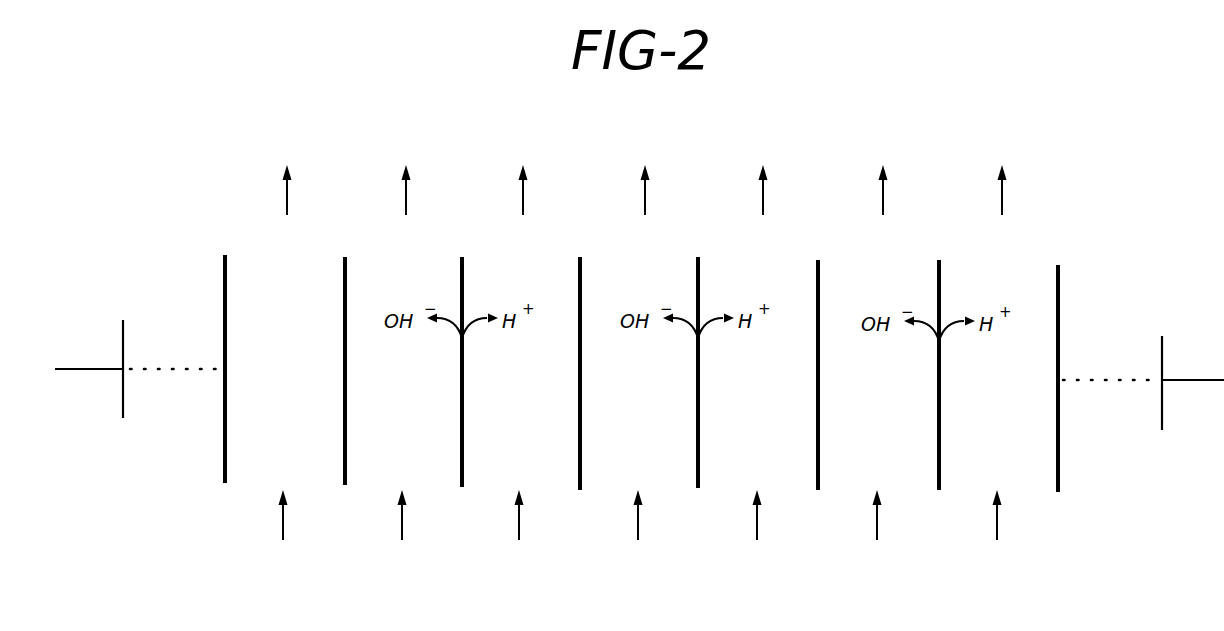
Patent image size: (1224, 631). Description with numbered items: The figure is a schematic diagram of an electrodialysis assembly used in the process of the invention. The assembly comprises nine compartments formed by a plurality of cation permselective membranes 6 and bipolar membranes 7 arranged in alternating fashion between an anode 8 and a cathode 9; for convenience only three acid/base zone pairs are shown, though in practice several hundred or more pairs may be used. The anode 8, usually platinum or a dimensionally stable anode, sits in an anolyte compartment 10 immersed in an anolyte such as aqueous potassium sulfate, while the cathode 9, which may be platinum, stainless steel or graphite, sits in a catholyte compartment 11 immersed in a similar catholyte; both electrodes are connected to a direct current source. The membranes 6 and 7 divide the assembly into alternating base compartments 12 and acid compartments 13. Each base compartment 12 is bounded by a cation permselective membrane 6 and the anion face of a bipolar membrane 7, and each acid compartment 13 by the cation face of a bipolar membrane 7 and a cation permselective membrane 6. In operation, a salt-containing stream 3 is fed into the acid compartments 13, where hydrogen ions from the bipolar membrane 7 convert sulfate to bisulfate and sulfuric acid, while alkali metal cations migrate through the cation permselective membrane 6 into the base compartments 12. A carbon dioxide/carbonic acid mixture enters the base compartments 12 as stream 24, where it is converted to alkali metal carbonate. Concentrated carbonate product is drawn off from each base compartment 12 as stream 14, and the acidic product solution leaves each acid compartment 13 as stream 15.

The stream 3 is at (282, 527).
The cation permselective membrane 6 is at (226, 256).
The bipolar membrane 7 is at (463, 264).
The anode 8 is at (100, 369).
The cathode 9 is at (1189, 381).
The anolyte compartment 10 is at (185, 400).
The catholyte compartment 11 is at (1116, 410).
The base compartment 12 is at (413, 389).
The acid compartment 13 is at (293, 389).
The stream 14 is at (408, 198).
The stream 15 is at (289, 198).
The stream 24 is at (401, 528).